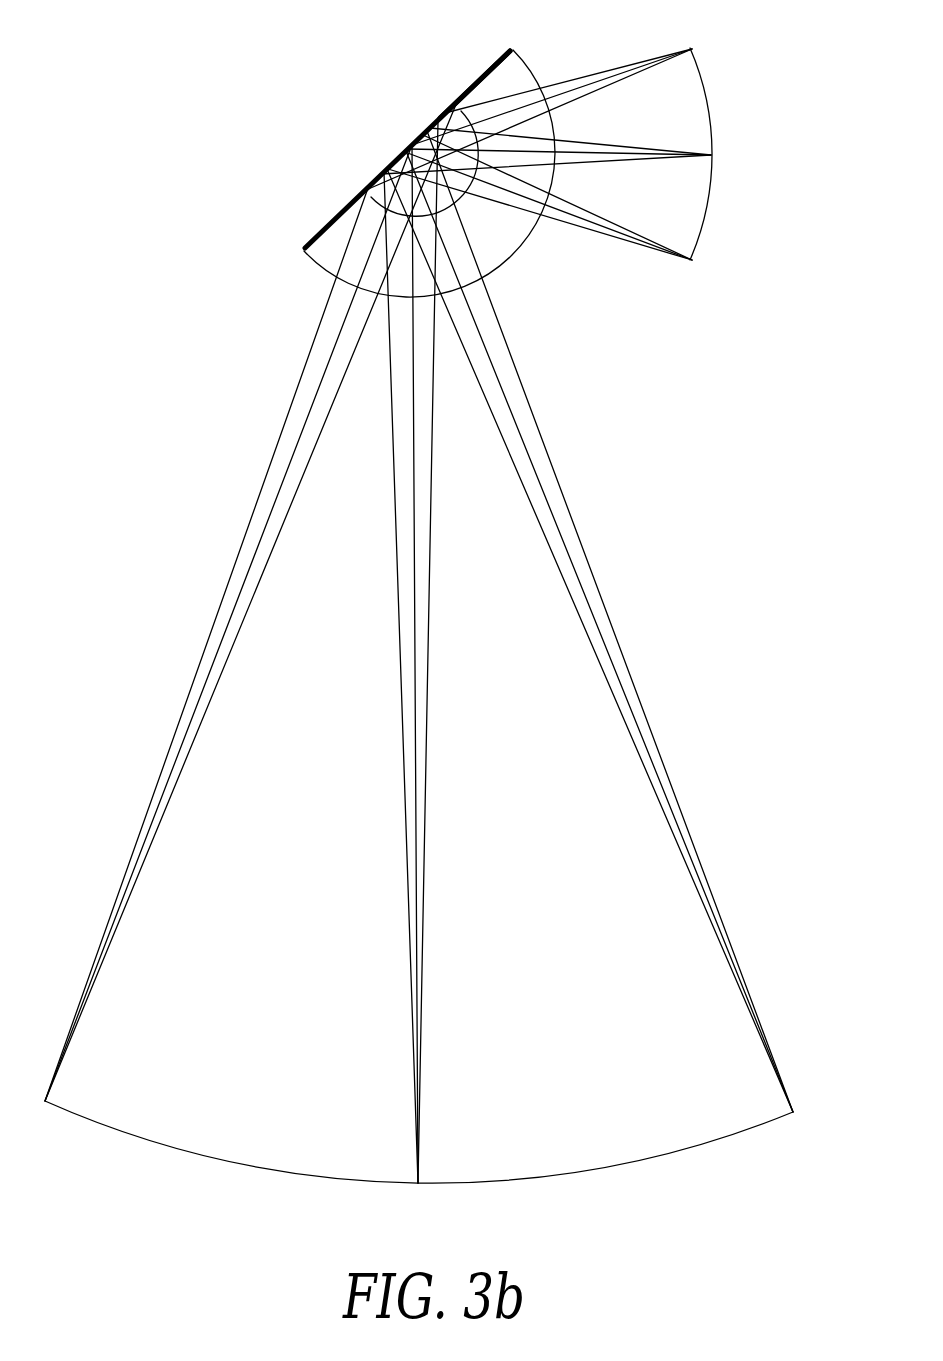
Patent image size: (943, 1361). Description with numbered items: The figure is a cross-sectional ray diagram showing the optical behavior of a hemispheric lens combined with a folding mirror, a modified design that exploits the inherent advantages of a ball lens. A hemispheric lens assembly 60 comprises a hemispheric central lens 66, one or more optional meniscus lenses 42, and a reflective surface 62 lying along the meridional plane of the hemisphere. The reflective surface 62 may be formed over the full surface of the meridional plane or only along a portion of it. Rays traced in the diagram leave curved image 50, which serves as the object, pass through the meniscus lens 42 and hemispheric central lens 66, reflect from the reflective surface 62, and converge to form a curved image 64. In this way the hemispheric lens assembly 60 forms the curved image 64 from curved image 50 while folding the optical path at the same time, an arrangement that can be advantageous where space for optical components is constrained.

The meniscus lens 42 is at (520, 250).
The curved image 50 is at (712, 117).
The hemispheric lens assembly 60 is at (396, 158).
The reflective surface 62 is at (368, 198).
The curved image 64 is at (581, 1168).
The hemispheric central lens 66 is at (477, 92).